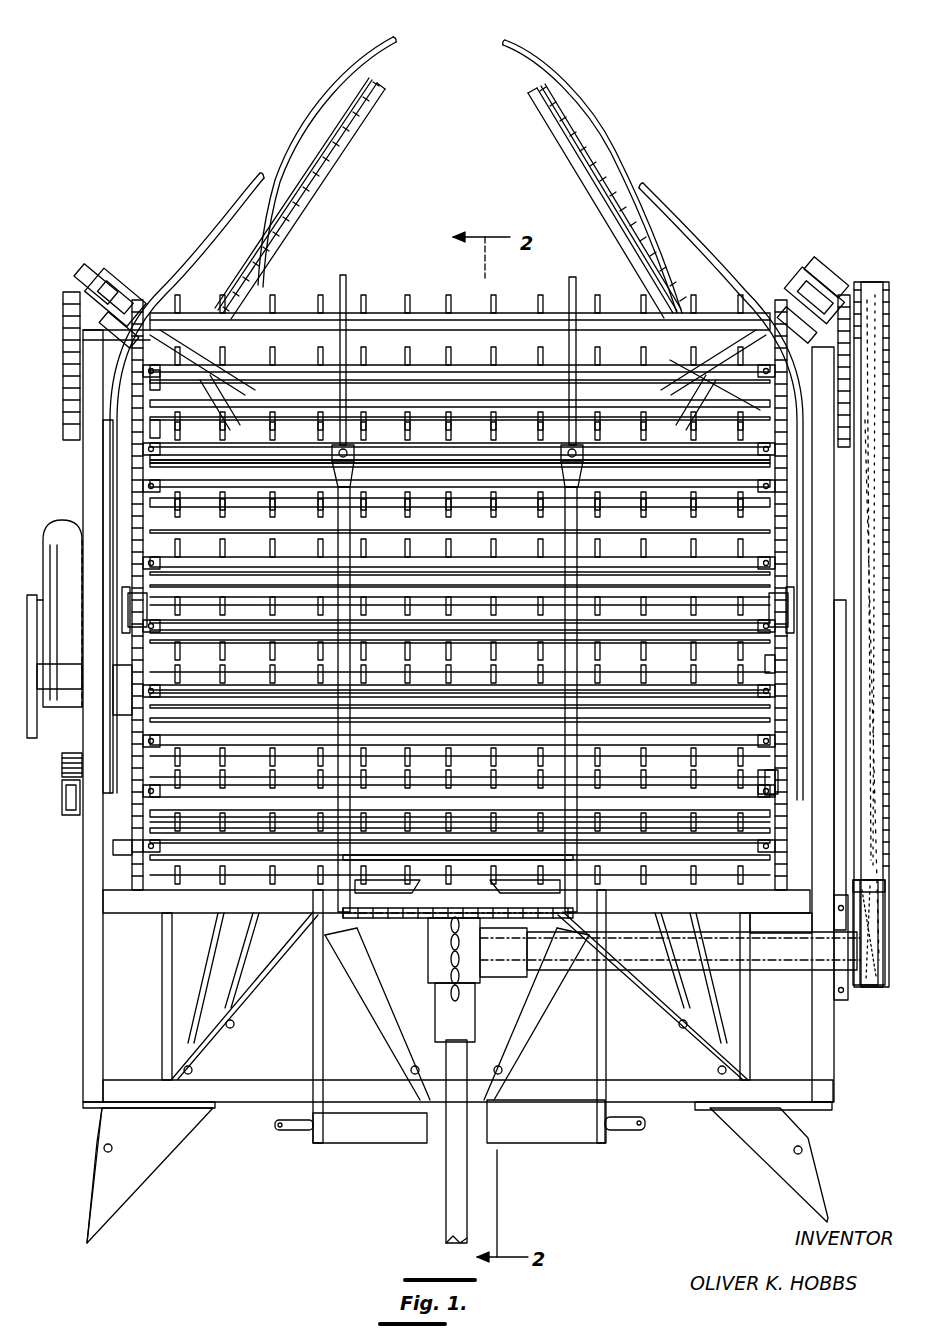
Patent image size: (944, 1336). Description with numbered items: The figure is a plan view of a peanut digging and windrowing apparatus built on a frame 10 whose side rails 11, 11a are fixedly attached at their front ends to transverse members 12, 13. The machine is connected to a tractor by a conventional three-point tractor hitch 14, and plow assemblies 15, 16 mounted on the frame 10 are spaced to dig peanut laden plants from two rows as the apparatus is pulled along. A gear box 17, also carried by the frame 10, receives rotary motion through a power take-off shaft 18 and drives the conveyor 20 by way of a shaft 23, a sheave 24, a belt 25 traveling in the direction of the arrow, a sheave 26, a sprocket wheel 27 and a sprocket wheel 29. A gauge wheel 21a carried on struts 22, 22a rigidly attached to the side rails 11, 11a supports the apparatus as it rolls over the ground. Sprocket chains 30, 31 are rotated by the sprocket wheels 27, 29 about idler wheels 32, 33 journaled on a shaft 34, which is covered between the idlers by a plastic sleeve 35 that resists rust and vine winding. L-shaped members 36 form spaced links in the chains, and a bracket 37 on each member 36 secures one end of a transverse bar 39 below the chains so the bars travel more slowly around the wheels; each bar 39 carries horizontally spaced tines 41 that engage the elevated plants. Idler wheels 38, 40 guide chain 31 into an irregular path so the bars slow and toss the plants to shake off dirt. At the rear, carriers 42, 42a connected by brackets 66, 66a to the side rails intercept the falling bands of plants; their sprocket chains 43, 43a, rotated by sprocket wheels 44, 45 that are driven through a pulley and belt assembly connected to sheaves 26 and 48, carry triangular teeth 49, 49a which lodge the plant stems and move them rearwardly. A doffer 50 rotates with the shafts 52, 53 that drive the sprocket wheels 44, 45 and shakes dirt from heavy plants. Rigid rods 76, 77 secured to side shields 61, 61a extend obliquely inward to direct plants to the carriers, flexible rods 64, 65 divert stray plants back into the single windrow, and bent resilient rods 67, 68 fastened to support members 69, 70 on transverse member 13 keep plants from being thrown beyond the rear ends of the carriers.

The frame 10 is at (75, 972).
The side rail 11 is at (826, 1020).
The side rail 11a is at (92, 875).
The transverse member 12 is at (138, 1082).
The transverse member 13 is at (188, 908).
The three-point tractor hitch 14 is at (365, 1020).
The plow assembly 15 is at (795, 1118).
The plow assembly 16 is at (105, 1118).
The gear box 17 is at (428, 990).
The power take-off shaft 18 is at (452, 1170).
The conveyor 20 is at (476, 300).
The gauge wheel 21a is at (62, 520).
The strut 22 is at (836, 735).
The strut 22a is at (62, 790).
The shaft 23 is at (768, 958).
The sheave 24 is at (884, 975).
The belt 25 is at (880, 930).
The sheave 26 is at (886, 285).
The sprocket wheel 27 is at (790, 300).
The sprocket wheel 29 is at (125, 320).
The sprocket chain 30 is at (760, 465).
The sprocket chain 31 is at (150, 458).
The idler wheel 32 is at (768, 893).
The idler wheel 33 is at (135, 892).
The shaft 34 is at (836, 845).
The plastic sleeve 35 is at (118, 850).
The L-shaped member 36 is at (148, 370).
The bracket 37 is at (155, 438).
The idler wheel 38 is at (120, 705).
The bar 39 is at (420, 312).
The idler wheel 40 is at (128, 600).
The tine 41 is at (308, 302).
The carrier 42 is at (560, 148).
The carrier 42a is at (350, 140).
The sprocket chain 43 is at (570, 112).
The sprocket chain 43a is at (345, 103).
The sprocket wheel 44 is at (195, 318).
The sprocket wheel 45 is at (692, 325).
The sheave 48 is at (66, 370).
The tooth 49 is at (585, 175).
The tooth 49a is at (355, 115).
The doffer 50 is at (680, 378).
The shaft 52 is at (800, 275).
The shaft 53 is at (95, 282).
The side shield 61 is at (812, 470).
The side shield 61a is at (108, 470).
The flexible rod 64 is at (575, 78).
The flexible rod 65 is at (352, 67).
The bracket 66 is at (822, 262).
The bracket 66a is at (108, 272).
The resilient rod 67 is at (343, 275).
The resilient rod 68 is at (573, 277).
The support member 69 is at (568, 495).
The support member 70 is at (340, 490).
The rigid rod 76 is at (250, 185).
The rigid rod 77 is at (647, 183).